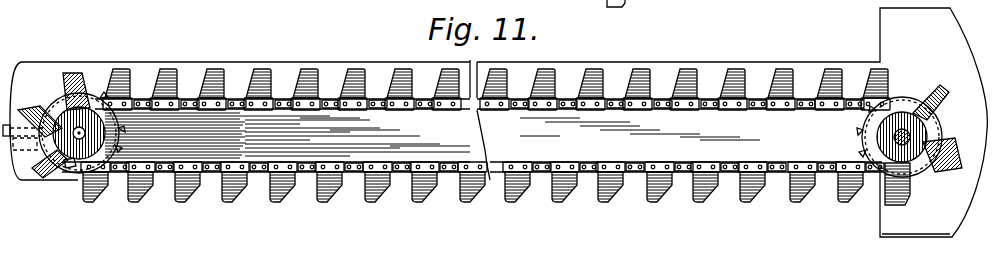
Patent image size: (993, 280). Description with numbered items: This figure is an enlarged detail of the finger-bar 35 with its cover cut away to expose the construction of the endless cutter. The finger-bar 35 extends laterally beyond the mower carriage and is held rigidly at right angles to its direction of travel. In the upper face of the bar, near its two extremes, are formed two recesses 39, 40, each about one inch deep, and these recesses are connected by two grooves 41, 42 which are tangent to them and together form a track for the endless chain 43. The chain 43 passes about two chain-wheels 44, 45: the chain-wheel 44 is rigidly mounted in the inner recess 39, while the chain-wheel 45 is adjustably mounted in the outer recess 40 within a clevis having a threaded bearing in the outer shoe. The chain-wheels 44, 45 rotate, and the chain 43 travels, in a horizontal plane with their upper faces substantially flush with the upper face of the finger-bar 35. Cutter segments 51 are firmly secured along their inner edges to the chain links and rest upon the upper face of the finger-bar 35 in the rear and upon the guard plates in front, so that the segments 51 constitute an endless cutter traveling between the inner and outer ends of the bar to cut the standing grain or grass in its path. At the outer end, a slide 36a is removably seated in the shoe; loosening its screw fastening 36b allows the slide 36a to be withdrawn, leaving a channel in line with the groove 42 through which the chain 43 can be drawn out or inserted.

The finger-bar 35 is at (496, 74).
The recess 39 is at (120, 118).
The recess 40 is at (855, 97).
The groove 41 is at (325, 98).
The groove 42 is at (212, 175).
The endless chain 43 is at (609, 100).
The chain-wheel 44 is at (900, 108).
The chain-wheel 45 is at (68, 170).
The segments 51 is at (217, 77).
The slide 36a is at (38, 173).
The screw fastening 36b is at (13, 160).